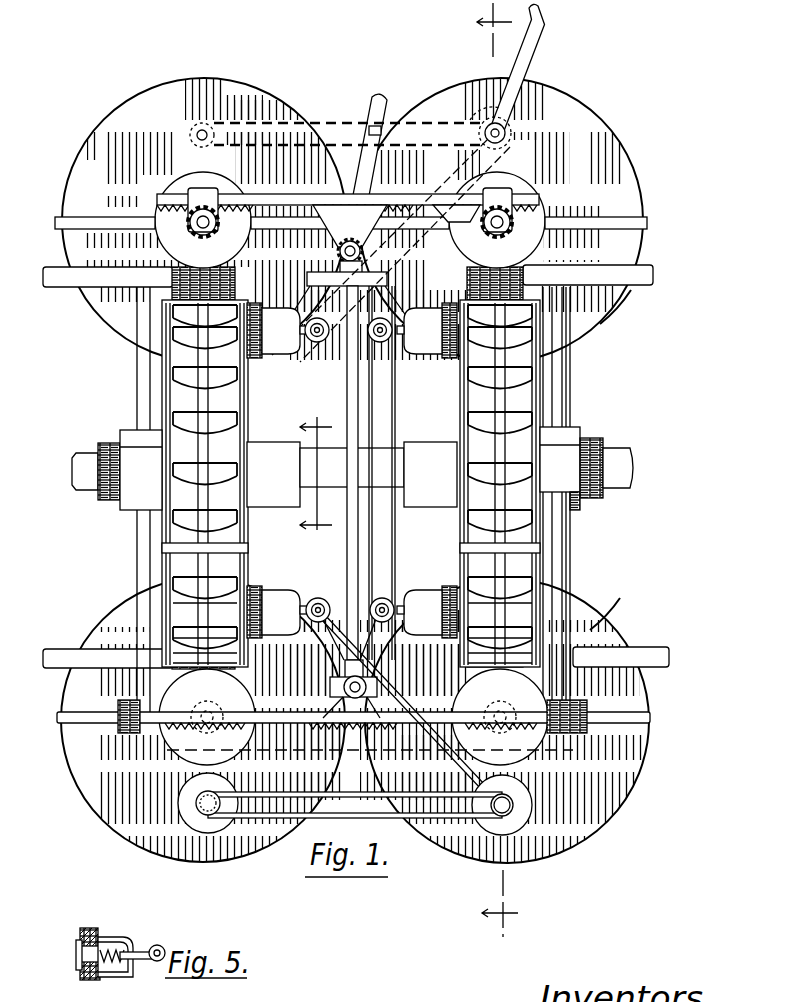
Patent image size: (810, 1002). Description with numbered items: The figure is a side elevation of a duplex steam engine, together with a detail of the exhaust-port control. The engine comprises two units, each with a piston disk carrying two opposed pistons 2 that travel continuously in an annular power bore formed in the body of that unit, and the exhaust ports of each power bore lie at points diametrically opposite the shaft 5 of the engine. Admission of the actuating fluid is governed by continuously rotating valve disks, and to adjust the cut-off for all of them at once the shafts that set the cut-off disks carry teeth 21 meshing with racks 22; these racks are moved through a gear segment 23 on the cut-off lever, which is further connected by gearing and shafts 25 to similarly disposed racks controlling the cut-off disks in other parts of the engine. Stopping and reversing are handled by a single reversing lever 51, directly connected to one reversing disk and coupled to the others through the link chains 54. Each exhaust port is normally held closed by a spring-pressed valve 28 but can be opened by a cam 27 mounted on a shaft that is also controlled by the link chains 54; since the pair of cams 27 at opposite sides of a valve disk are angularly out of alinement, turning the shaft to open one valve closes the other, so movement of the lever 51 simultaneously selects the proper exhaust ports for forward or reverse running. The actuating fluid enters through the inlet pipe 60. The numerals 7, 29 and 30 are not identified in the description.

In FIG. 1, the pistons 2 is at (507, 468).
In FIG. 1, the shaft 5 is at (624, 463).
In FIG. 1, the section line 7- 7 is at (315, 476).
In FIG. 1, the teeth 21 is at (513, 231).
In FIG. 1, the racks 22 is at (530, 195).
In FIG. 1, the gear segment 23 is at (323, 210).
In FIG. 1, the shafts 25 is at (349, 356).
In FIG. 1, the cam 27 is at (308, 341).
In FIG. 5, the cam 27 is at (162, 950).
In FIG. 5, the spring-pressed valve 28 is at (80, 955).
In FIG. 1, the disk wheel 29 is at (390, 100).
In FIG. 1, the wheel rim 30 is at (613, 305).
In FIG. 1, the lever 51 is at (551, 33).
In FIG. 1, the link chains 54 is at (397, 400).
In FIG. 1, the inlet pipe 60 is at (655, 275).